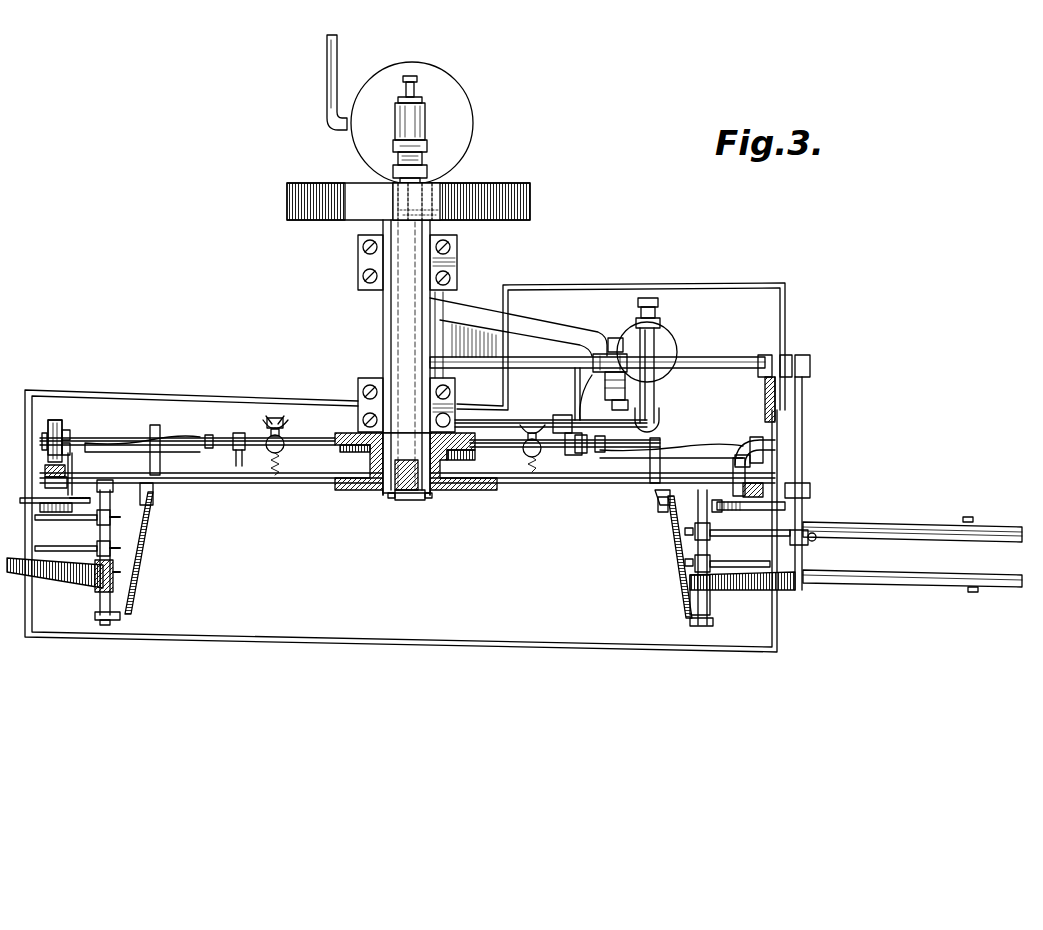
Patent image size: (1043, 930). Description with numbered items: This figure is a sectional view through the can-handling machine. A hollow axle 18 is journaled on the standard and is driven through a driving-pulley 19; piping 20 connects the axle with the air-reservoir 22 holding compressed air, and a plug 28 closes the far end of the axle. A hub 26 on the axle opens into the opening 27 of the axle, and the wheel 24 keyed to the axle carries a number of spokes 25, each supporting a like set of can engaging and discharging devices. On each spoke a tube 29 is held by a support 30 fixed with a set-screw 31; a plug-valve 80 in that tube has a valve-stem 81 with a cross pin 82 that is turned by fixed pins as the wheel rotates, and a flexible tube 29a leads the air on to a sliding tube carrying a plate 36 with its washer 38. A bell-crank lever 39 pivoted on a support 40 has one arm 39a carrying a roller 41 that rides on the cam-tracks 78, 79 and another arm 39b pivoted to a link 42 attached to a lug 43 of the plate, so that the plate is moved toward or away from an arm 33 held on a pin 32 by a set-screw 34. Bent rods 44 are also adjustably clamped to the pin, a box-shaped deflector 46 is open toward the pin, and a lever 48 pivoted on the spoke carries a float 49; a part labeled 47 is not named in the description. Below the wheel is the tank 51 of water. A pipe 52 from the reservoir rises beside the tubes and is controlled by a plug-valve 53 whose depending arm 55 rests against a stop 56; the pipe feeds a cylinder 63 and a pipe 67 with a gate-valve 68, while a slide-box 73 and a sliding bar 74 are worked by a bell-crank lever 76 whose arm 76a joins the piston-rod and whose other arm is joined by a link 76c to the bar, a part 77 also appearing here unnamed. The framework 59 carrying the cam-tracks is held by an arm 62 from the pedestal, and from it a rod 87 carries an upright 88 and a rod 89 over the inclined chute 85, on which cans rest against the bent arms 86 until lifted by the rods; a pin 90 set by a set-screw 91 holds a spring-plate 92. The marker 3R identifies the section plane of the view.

The rod 3R is at (690, 605).
The axle 18 is at (390, 323).
The driving-pulley 19 is at (530, 207).
The piping 20 is at (420, 166).
The air-reservoir 22 is at (460, 108).
The wheel 24 is at (440, 497).
The spokes 25 is at (238, 484).
The hub 26 is at (452, 466).
The opening 27 is at (360, 462).
The plug 28 is at (410, 500).
The tube 29 is at (322, 478).
The flexible tube 29a is at (160, 437).
The support 30 is at (233, 460).
The set-screw 31 is at (238, 432).
The pin 32 is at (98, 595).
The arm 33 is at (50, 575).
The set-screw 34 is at (120, 572).
The plate 36 is at (22, 500).
The washer 38 is at (40, 507).
The bell-crank lever 39 is at (64, 405).
The arm 39a is at (70, 433).
The arm 39b is at (70, 448).
The support 40 is at (770, 447).
The roller 41 is at (735, 492).
The link 42 is at (406, 475).
The lug 43 is at (45, 470).
The rods 44 is at (75, 520).
The deflector 46 is at (140, 525).
The hook 47 is at (113, 488).
The lever 48 is at (160, 455).
The float 49 is at (153, 495).
The tank 51 is at (405, 467).
The pipe 52 is at (445, 242).
The plug-valve 53 is at (560, 414).
The arm 55 is at (598, 470).
The stop 56 is at (568, 394).
The framework 59 is at (735, 356).
The arm 62 is at (440, 315).
The cylinder 63 is at (665, 345).
The pipe 67 is at (656, 382).
The gate-valve 68 is at (658, 302).
The slide-box 73 is at (614, 337).
The sliding bar 74 is at (605, 386).
The bell-crank lever 76 is at (638, 416).
The arm 76a is at (663, 393).
The link 76c is at (585, 397).
The block 77 is at (605, 380).
The cam-track 78 is at (760, 400).
The cam-track 79 is at (748, 448).
The plug-valve 80 is at (284, 435).
The valve-stem 81 is at (288, 418).
The pin 82 is at (380, 414).
The inclined track or chute 85 is at (962, 537).
The arms 86 is at (698, 505).
The rod 87 is at (805, 420).
The upright 88 is at (808, 485).
The rod 89 is at (802, 562).
The pin 90 is at (805, 530).
The set-screw 91 is at (815, 535).
The spring-plate 92 is at (730, 512).